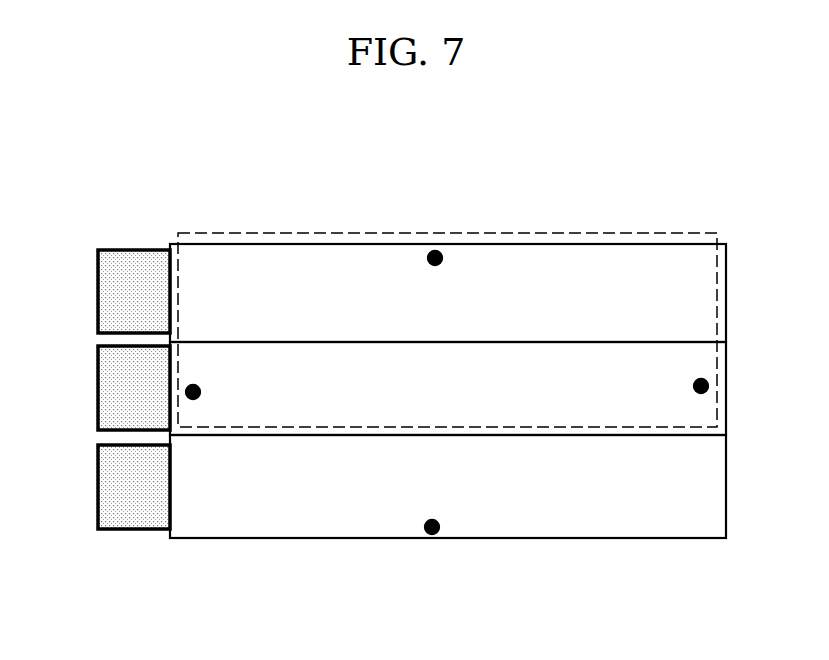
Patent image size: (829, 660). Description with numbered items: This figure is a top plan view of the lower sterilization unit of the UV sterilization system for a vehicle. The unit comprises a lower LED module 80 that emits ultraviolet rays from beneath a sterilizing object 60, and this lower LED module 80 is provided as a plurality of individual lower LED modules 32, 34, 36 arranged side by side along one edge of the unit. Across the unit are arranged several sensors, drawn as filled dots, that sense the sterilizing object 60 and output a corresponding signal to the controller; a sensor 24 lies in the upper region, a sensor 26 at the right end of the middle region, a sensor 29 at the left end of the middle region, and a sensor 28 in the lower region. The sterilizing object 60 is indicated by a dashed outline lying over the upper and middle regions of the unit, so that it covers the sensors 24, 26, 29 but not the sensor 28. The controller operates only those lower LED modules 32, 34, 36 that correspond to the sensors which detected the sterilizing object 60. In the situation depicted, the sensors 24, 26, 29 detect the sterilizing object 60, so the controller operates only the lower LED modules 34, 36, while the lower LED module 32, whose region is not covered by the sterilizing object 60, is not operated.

The sterilizing object 60 is at (620, 233).
The sensor 24 is at (442, 258).
The sensor 26 is at (708, 386).
The sensor 28 is at (440, 525).
The sensor 29 is at (197, 399).
The lower LED module 36 is at (98, 292).
The lower LED module 34 is at (98, 389).
The lower LED module 32 is at (98, 487).
The lower LED module 80 is at (124, 560).